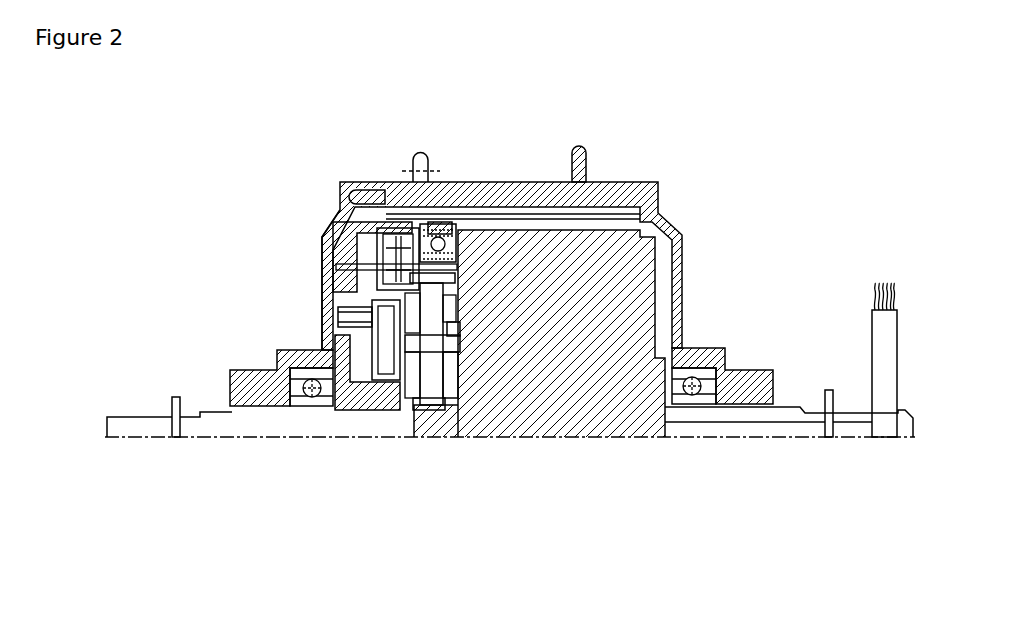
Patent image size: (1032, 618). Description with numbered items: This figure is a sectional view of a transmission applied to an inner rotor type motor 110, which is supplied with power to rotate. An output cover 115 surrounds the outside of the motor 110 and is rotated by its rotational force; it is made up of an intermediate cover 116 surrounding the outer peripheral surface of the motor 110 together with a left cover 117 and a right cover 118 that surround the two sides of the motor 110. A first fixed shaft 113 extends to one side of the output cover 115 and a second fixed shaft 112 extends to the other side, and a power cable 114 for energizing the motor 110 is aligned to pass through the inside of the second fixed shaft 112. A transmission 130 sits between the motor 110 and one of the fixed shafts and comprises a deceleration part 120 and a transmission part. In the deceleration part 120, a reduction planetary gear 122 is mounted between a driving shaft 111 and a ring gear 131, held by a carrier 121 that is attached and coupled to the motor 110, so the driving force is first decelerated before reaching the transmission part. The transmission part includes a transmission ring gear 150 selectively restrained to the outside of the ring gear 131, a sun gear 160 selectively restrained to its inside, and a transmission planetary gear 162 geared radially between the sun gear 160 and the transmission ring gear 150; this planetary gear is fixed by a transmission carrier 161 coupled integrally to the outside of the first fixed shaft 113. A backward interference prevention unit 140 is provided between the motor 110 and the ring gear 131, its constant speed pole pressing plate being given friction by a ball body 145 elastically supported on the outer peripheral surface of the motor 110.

The motor 110 is at (620, 275).
The driving shaft 111 is at (438, 426).
The second fixed shaft 112 is at (720, 414).
The first fixed shaft 113 is at (210, 428).
The power cable 114 is at (883, 350).
The output cover 115 is at (322, 215).
The intermediate cover 116 is at (603, 190).
The left cover 117 is at (355, 295).
The right cover 118 is at (680, 307).
The deceleration part 120 is at (406, 408).
The carrier 121 is at (456, 328).
The reduction planetary gear 122 is at (447, 387).
The transmission 130 is at (397, 213).
The ring gear 131 is at (456, 262).
The backward interference prevention unit 140 is at (425, 226).
The ball body 145 is at (450, 228).
The transmission ring gear 150 is at (348, 188).
The sun gear 160 is at (377, 405).
The transmission carrier 161 is at (322, 337).
The transmission planetary gear 162 is at (338, 314).